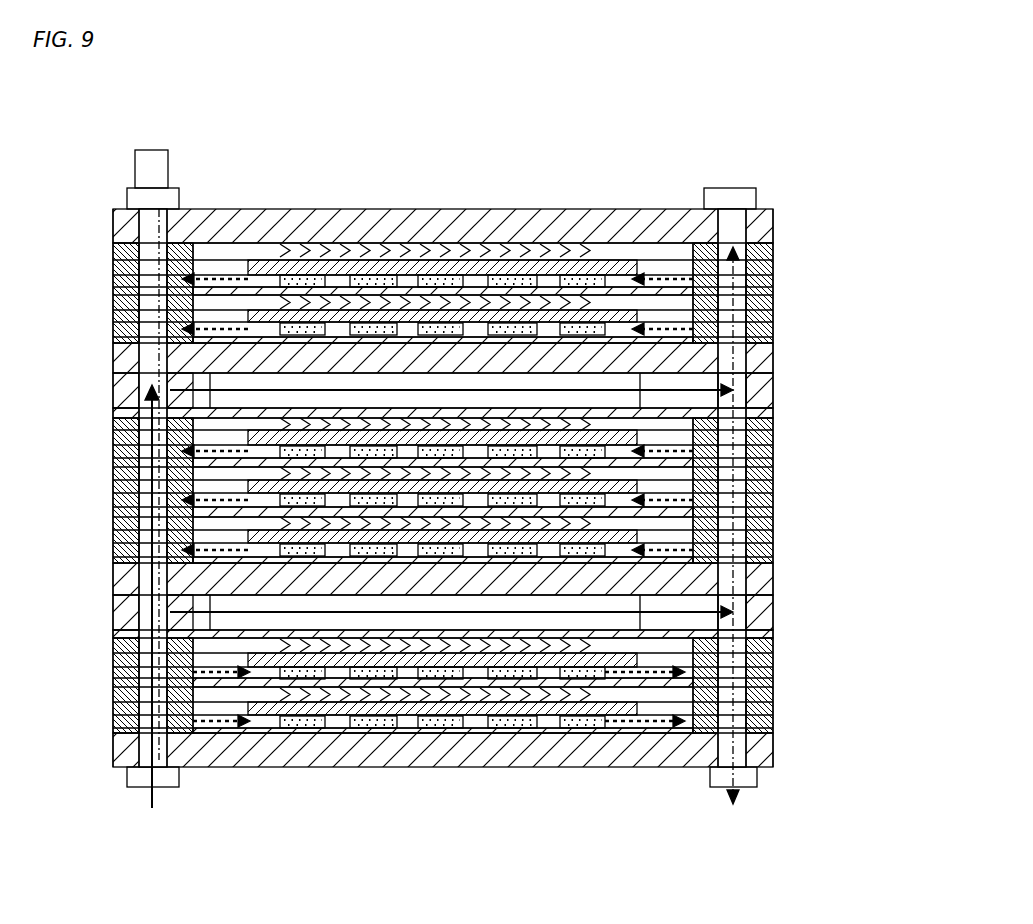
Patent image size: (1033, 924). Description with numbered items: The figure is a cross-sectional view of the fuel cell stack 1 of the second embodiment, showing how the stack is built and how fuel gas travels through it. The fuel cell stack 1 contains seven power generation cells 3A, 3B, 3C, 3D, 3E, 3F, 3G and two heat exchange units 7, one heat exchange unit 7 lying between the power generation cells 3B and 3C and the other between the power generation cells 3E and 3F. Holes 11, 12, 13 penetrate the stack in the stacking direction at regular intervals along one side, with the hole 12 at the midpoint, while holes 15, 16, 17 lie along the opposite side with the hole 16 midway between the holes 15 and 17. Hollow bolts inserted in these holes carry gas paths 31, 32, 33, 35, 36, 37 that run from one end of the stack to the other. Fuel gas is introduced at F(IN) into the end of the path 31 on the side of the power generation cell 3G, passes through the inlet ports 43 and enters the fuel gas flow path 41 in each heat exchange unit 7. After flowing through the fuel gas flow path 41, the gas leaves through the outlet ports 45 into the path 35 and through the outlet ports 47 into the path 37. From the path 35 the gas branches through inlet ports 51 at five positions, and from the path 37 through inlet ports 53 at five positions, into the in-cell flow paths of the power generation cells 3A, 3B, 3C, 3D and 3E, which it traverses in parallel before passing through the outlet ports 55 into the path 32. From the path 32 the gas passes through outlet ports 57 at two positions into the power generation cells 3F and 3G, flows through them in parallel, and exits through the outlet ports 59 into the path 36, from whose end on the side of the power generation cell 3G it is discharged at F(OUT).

The fuel cell stack 1 is at (820, 123).
The power generation cell 3A is at (112, 263).
The power generation cell 3B is at (112, 313).
The power generation cell 3C is at (112, 436).
The power generation cell 3D is at (112, 485).
The power generation cell 3E is at (112, 521).
The power generation cell 3F is at (112, 660).
The power generation cell 3G is at (112, 710).
The heat exchange unit 7 is at (745, 399).
The hole 11 is at (107, 468).
The hole 12 is at (107, 468).
The hole 13 is at (107, 468).
The hole 15 is at (790, 485).
The hole 16 is at (790, 485).
The hole 17 is at (790, 485).
The gas path 31 is at (101, 488).
The gas path 32 is at (101, 488).
The gas path 33 is at (152, 238).
The gas path 35 is at (797, 506).
The gas path 36 is at (797, 506).
The gas path 37 is at (748, 234).
The fuel gas flow path 41 is at (417, 603).
The inlet port 43 is at (152, 385).
The outlet port 45 is at (789, 490).
The outlet port 47 is at (735, 385).
The inlet port 51 is at (730, 448).
The inlet port 53 is at (700, 322).
The outlet port 55 is at (184, 325).
The outlet port 57 is at (180, 706).
The outlet port 59 is at (716, 725).